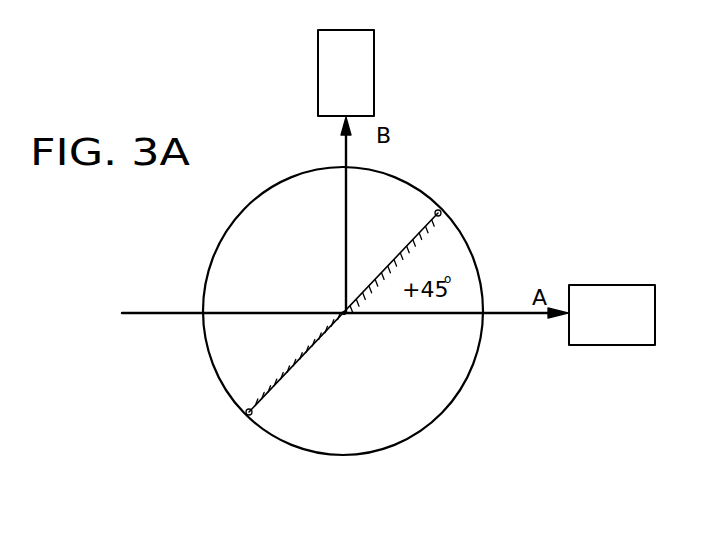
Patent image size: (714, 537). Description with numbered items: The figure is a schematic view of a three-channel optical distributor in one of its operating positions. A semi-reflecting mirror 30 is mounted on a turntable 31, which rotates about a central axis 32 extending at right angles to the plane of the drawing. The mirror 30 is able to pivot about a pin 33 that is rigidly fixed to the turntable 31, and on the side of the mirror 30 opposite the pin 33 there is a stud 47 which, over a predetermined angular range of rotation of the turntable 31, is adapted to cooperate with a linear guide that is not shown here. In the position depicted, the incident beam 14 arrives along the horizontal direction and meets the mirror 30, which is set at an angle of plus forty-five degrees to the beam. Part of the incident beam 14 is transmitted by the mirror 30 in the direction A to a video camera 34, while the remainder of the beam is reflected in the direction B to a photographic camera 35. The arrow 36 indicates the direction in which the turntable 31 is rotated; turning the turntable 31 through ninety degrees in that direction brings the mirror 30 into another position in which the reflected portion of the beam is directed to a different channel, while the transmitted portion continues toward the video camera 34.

The incident beam 14 is at (148, 310).
The semi-reflecting mirror 30 is at (418, 240).
The turntable 31 is at (477, 355).
The central axis 32 is at (345, 317).
The pin 33 is at (440, 210).
The video camera 34 is at (618, 285).
The photographic camera 35 is at (365, 62).
The arrow 36 is at (205, 396).
The stud 47 is at (250, 416).